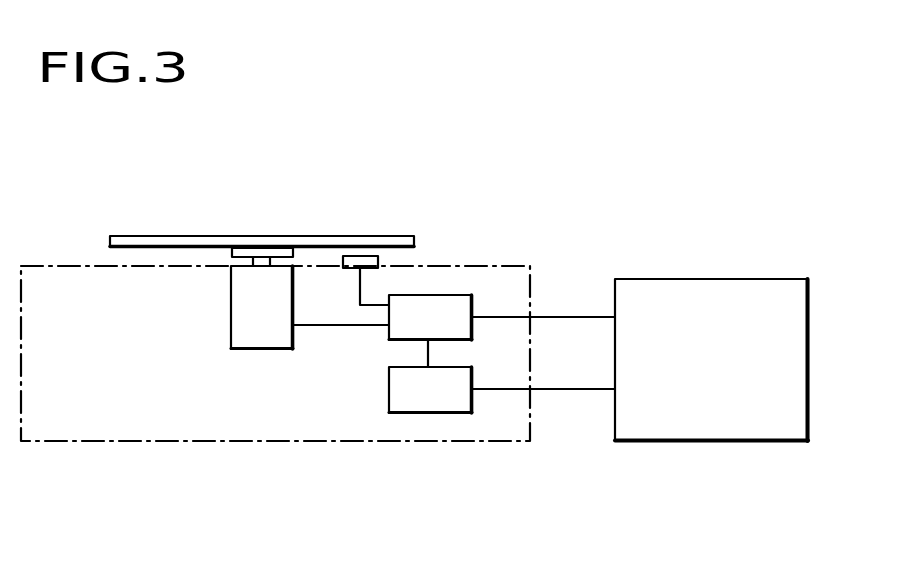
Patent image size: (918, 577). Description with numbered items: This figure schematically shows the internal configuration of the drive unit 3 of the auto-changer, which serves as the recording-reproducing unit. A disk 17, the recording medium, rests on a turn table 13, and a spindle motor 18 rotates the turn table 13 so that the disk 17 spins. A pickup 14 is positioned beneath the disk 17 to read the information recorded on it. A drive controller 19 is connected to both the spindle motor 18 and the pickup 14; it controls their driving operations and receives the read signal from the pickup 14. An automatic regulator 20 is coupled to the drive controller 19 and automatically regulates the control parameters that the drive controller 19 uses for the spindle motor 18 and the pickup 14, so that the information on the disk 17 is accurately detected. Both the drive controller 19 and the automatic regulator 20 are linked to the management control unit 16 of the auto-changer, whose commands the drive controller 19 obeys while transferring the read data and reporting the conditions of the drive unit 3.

The drive unit 3 is at (158, 441).
The turn table 13 is at (272, 250).
The pickup 14 is at (380, 260).
The management control unit 16 is at (713, 288).
The disk 17 is at (370, 238).
The spindle motor 18 is at (255, 337).
The drive controller 19 is at (396, 330).
The automatic regulator 20 is at (433, 400).